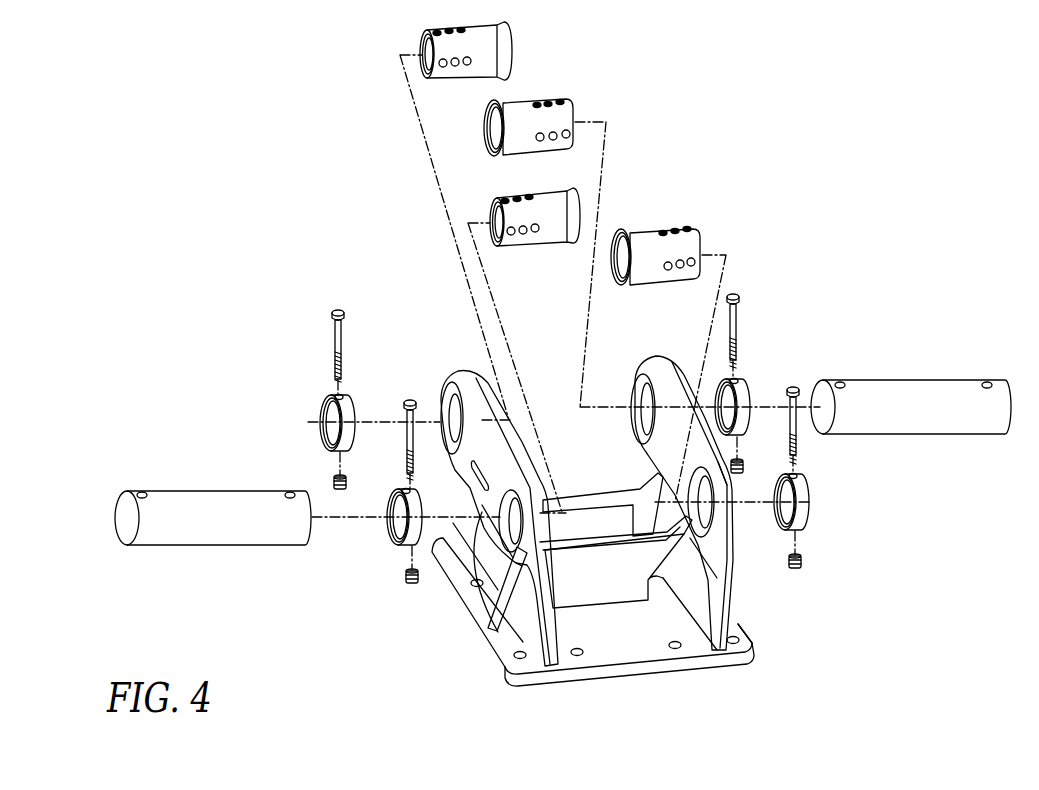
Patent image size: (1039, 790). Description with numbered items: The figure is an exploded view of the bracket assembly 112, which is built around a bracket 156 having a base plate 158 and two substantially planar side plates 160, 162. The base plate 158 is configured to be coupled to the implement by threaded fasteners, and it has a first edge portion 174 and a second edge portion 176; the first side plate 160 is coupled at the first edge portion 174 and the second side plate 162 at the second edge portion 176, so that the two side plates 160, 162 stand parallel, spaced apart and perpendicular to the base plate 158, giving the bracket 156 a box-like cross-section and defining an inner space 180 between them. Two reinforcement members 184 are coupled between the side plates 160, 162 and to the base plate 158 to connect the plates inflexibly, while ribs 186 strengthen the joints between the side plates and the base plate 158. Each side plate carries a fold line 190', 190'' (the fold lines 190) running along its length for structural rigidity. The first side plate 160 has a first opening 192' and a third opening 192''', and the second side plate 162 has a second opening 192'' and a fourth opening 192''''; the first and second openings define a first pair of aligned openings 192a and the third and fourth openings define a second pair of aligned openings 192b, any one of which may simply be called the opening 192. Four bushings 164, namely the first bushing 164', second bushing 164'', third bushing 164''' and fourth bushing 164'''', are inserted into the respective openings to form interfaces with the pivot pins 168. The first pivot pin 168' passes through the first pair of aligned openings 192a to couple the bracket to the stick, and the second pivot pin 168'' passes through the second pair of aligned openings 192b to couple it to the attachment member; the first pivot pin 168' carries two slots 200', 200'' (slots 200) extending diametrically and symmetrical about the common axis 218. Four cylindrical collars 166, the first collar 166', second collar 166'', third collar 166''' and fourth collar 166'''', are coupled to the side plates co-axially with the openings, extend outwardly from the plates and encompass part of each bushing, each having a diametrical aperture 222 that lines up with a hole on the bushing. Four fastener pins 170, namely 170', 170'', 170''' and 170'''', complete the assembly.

The bracket assembly 112 is at (356, 168).
The bracket 156 is at (664, 677).
The base plate 158 is at (600, 681).
The first side plate 160 is at (520, 447).
The second side plate 162 is at (657, 356).
The bushings 164 is at (590, 149).
The first bushing 164' is at (490, 47).
The second bushing 164'' is at (555, 119).
The third bushing 164''' is at (521, 203).
The fourth bushing 164'''' is at (685, 250).
The collars 166 is at (540, 463).
The first collar 166' is at (313, 423).
The second collar 166'' is at (755, 397).
The third collar 166''' is at (379, 528).
The fourth collar 166'''' is at (774, 512).
The pivot pins 168 is at (563, 438).
The first pivot pin 168' is at (911, 383).
The second pivot pin 168'' is at (213, 494).
The fastener pins 170 is at (581, 378).
The first fastener pin 170' is at (326, 330).
The second fastener pin 170'' is at (764, 322).
The third fastener pin 170''' is at (396, 426).
The fourth fastener pin 170'''' is at (821, 398).
The first edge portion 174 is at (507, 650).
The second edge portion 176 is at (753, 650).
The inner space 180 is at (587, 485).
The reinforcement members 184 is at (617, 493).
The ribs 186 is at (440, 585).
The fold lines 190 is at (633, 619).
The fold line 190' is at (477, 619).
The fold line 190'' is at (748, 594).
The opening 192 is at (589, 471).
The first opening 192' is at (441, 390).
The second opening 192'' is at (620, 402).
The third opening 192''' is at (456, 553).
The fourth opening 192'''' is at (738, 523).
The first pair of aligned openings 192a is at (448, 413).
The second pair of aligned openings 192b is at (470, 623).
The slots 200 is at (581, 418).
The first slot 200' is at (509, 419).
The second slot 200'' is at (655, 418).
The common axis 218 is at (373, 420).
The aperture 222 is at (337, 395).